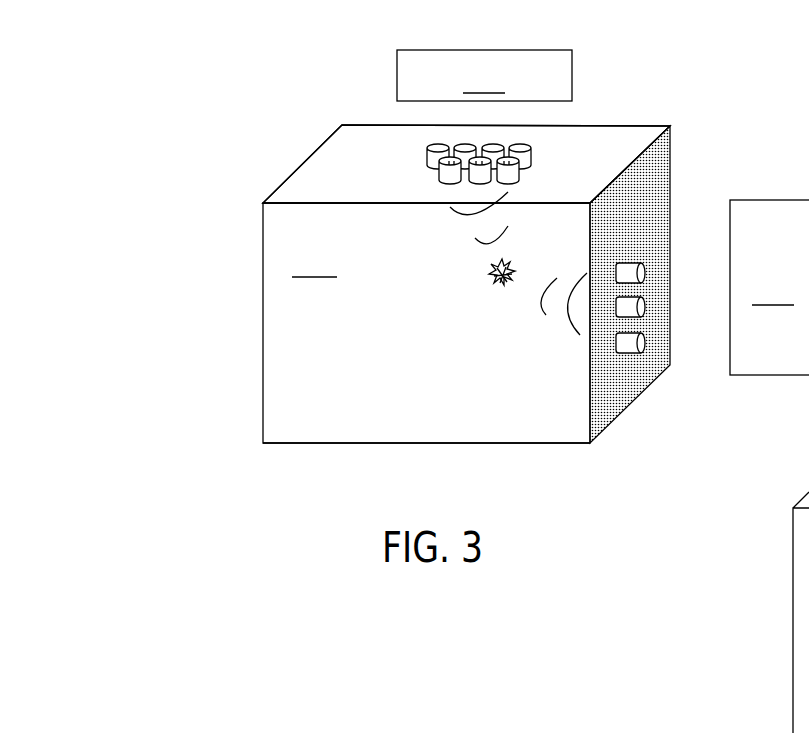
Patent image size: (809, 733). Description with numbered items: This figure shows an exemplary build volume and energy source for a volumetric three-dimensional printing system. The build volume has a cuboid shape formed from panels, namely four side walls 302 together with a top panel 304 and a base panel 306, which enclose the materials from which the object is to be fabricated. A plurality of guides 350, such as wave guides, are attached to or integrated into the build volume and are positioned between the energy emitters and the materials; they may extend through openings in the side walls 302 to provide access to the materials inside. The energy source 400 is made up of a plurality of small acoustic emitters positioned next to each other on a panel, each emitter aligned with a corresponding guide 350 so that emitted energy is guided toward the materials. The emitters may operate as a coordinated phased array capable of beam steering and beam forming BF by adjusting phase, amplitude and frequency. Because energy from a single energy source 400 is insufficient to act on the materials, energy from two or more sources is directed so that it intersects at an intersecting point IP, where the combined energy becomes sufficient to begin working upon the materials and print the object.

The side walls 302 is at (249, 274).
The top panel 304 is at (607, 133).
The base panel 306 is at (505, 454).
The guides 350 is at (440, 177).
The energy source 400 is at (661, 300).
The intersecting point IP is at (481, 286).
The beam forming BF is at (561, 336).